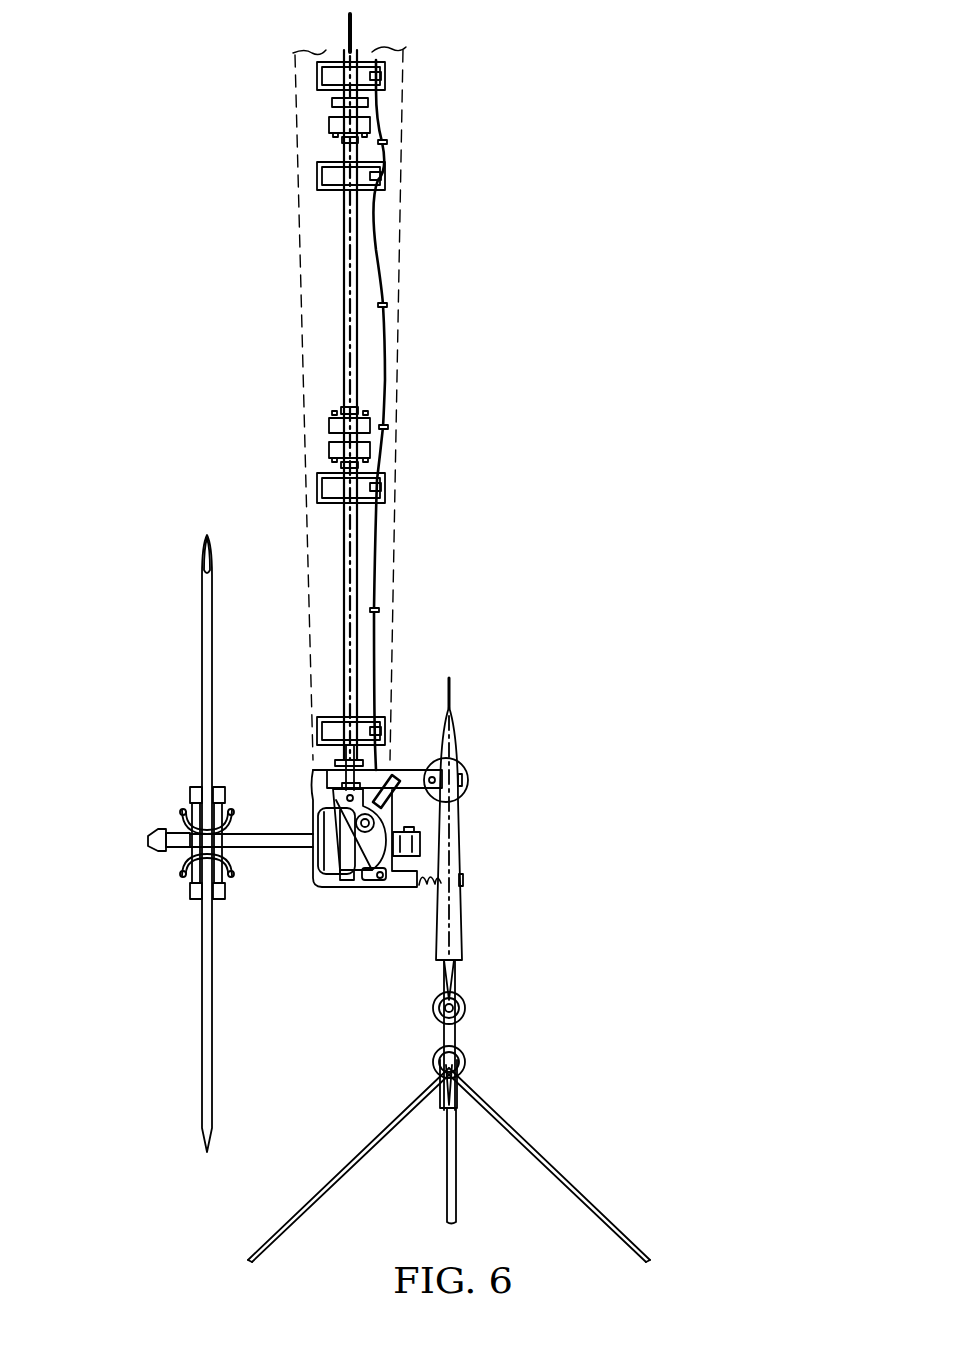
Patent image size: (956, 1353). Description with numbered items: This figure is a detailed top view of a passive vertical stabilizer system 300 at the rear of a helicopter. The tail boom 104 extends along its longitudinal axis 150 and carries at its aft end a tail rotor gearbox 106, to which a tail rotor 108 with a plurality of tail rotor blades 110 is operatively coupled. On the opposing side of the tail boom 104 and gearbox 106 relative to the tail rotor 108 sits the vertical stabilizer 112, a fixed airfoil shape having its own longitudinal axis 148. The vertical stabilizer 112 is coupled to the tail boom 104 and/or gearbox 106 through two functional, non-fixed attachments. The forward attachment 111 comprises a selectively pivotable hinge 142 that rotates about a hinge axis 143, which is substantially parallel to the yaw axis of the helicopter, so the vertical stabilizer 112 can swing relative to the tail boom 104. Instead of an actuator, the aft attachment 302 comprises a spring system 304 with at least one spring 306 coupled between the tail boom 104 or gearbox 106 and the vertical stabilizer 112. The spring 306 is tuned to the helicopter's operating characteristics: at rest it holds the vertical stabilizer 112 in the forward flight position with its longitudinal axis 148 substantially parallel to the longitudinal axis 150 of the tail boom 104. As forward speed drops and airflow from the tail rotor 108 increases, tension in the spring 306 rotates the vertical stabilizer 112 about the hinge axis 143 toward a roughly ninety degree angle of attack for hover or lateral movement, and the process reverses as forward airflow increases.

The tail boom 104 is at (301, 336).
The tail rotor gearbox 106 is at (332, 861).
The tail rotor 108 is at (160, 878).
The tail rotor blades 110 is at (201, 672).
The forward attachment 111 is at (418, 714).
The vertical stabilizer 112 is at (456, 934).
The hinge 142 is at (456, 797).
The hinge axis 143 is at (455, 772).
The longitudinal axis 148 is at (451, 690).
The longitudinal axis 150 is at (348, 31).
The vertical stabilizer system 300 is at (588, 725).
The aft attachment 302 is at (383, 899).
The spring system 304 is at (421, 915).
The spring 306 is at (436, 887).